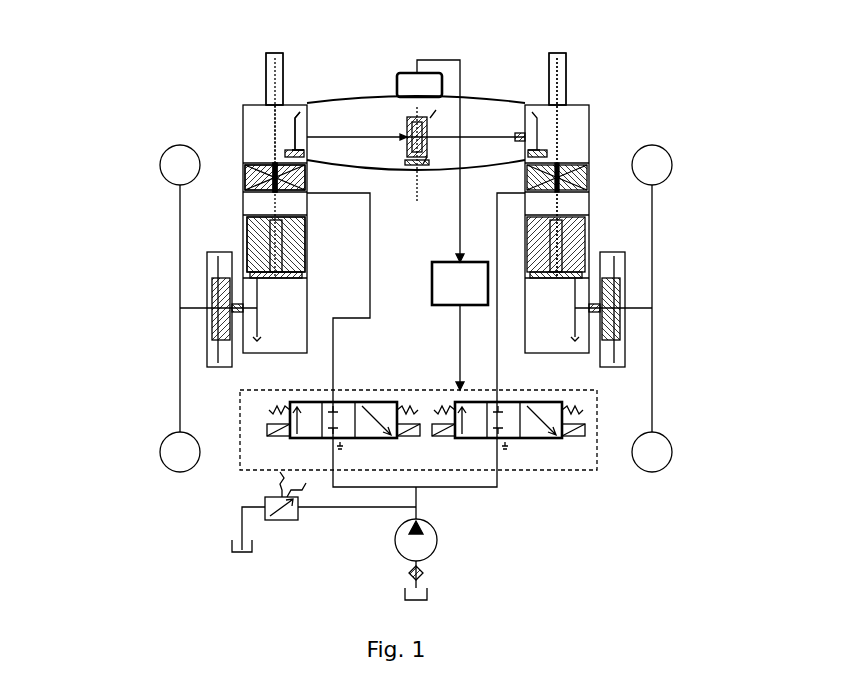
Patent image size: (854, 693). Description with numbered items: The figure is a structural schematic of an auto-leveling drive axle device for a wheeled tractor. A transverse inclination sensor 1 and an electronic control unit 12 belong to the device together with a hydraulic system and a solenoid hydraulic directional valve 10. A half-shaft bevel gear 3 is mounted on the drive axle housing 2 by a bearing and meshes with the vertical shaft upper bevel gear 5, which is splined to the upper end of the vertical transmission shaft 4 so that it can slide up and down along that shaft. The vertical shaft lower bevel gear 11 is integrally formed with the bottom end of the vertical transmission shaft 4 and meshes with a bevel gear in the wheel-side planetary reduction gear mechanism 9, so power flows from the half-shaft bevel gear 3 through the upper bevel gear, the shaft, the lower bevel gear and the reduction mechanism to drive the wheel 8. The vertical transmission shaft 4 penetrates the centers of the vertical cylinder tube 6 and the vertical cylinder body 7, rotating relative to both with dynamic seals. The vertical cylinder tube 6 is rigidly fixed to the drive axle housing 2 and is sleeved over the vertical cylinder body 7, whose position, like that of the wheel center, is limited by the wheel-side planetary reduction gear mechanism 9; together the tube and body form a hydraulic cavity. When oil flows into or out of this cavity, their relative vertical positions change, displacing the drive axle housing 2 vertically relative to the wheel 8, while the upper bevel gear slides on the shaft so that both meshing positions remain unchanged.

The transverse inclination sensor 1 is at (396, 84).
The drive axle housing 2 is at (268, 66).
The half-shaft bevel gear 3 is at (292, 125).
The vertical transmission shaft 4 is at (275, 140).
The vertical shaft upper bevel gear 5 is at (250, 165).
The vertical cylinder tube 6 is at (247, 186).
The vertical cylinder body 7 is at (243, 227).
The wheel 8 is at (178, 265).
The wheel-side planetary reduction gear mechanism 9 is at (205, 340).
The solenoid hydraulic directional valve 10 is at (240, 416).
The vertical shaft lower bevel gear 11 is at (300, 270).
The electronic control unit 12 is at (431, 306).